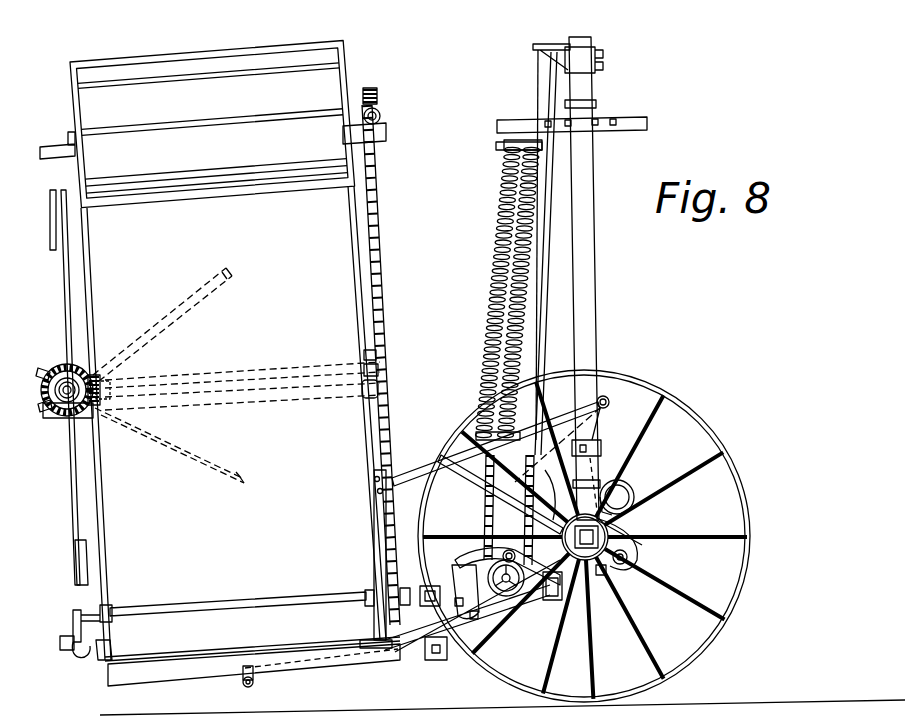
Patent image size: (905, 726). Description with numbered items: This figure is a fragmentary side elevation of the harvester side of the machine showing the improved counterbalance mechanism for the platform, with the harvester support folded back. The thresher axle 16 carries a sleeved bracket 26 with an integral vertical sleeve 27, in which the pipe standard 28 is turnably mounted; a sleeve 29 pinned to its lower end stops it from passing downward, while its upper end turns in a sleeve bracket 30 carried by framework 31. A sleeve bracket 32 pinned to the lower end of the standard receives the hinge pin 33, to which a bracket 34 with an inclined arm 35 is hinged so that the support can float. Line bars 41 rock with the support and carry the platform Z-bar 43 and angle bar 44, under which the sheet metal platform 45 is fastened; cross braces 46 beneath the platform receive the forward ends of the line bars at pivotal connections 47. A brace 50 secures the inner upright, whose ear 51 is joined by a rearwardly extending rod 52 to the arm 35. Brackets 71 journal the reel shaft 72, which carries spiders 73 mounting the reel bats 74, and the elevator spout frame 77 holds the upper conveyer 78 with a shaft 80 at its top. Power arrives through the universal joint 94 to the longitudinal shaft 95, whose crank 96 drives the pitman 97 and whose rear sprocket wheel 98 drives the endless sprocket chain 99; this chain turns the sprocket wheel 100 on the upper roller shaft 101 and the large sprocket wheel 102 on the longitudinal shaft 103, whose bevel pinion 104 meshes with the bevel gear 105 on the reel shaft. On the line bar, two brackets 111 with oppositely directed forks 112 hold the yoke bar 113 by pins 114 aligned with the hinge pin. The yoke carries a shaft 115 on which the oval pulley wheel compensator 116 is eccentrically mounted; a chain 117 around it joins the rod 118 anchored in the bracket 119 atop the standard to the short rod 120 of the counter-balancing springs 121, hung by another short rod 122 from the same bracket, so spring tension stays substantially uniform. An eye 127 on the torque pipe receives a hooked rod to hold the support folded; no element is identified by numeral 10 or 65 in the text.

The shaft 10 is at (386, 392).
The axle 16 is at (618, 512).
The sleeved bracket 26 is at (636, 497).
The vertically disposed sleeve 27 is at (602, 476).
The standard 28 is at (596, 170).
The sleeve 29 is at (605, 450).
The sleeve bracket 30 is at (598, 100).
The framework 31 is at (640, 120).
The sleeve bracket 32 is at (605, 562).
The hinge pin 33 is at (650, 536).
The bracket 34 is at (545, 500).
The inclined arm 35 is at (607, 403).
The line bar 41 is at (455, 650).
The platform Z-bar 43 is at (100, 655).
The angle bar 44 is at (378, 650).
The sheet metal platform 45 is at (200, 656).
The cross brace 46 is at (180, 668).
The pivotal connection 47 is at (255, 690).
The brace 50 is at (376, 545).
The ear 51 is at (375, 492).
The rod 52 is at (430, 472).
The wheel 65 is at (750, 603).
The bracket 71 is at (92, 410).
The reel shaft 72 is at (67, 400).
The spider 73 is at (70, 532).
The reel bat 74 is at (78, 575).
The elevator spout frame 77 is at (342, 55).
The upper conveyer 78 is at (330, 88).
The shaft 80 is at (386, 135).
The universal joint 94 is at (425, 648).
The longitudinal shaft 95 is at (200, 607).
The crank 96 is at (74, 620).
The pitman 97 is at (68, 645).
The sprocket wheel 98 is at (372, 612).
The endless sprocket chain 99 is at (386, 300).
The sprocket wheel 100 is at (380, 96).
The upper roller shaft 101 is at (382, 116).
The sprocket wheel 102 is at (386, 372).
The longitudinal shaft 103 is at (385, 355).
The bevel pinion 104 is at (100, 378).
The bevel gear 105 is at (98, 410).
The bracket 111 is at (490, 605).
The fork 112 is at (460, 565).
The yoke bar 113 is at (553, 597).
The pin 114 is at (390, 578).
The shaft 115 is at (508, 558).
The pulley wheel compensator 116 is at (512, 592).
The chain 117 is at (540, 485).
The rod 118 is at (552, 96).
The bracket 119 is at (533, 47).
The short rod 120 is at (478, 478).
The counter-balancing springs 121 is at (500, 210).
The short rod 122 is at (538, 74).
The eye 127 is at (627, 557).